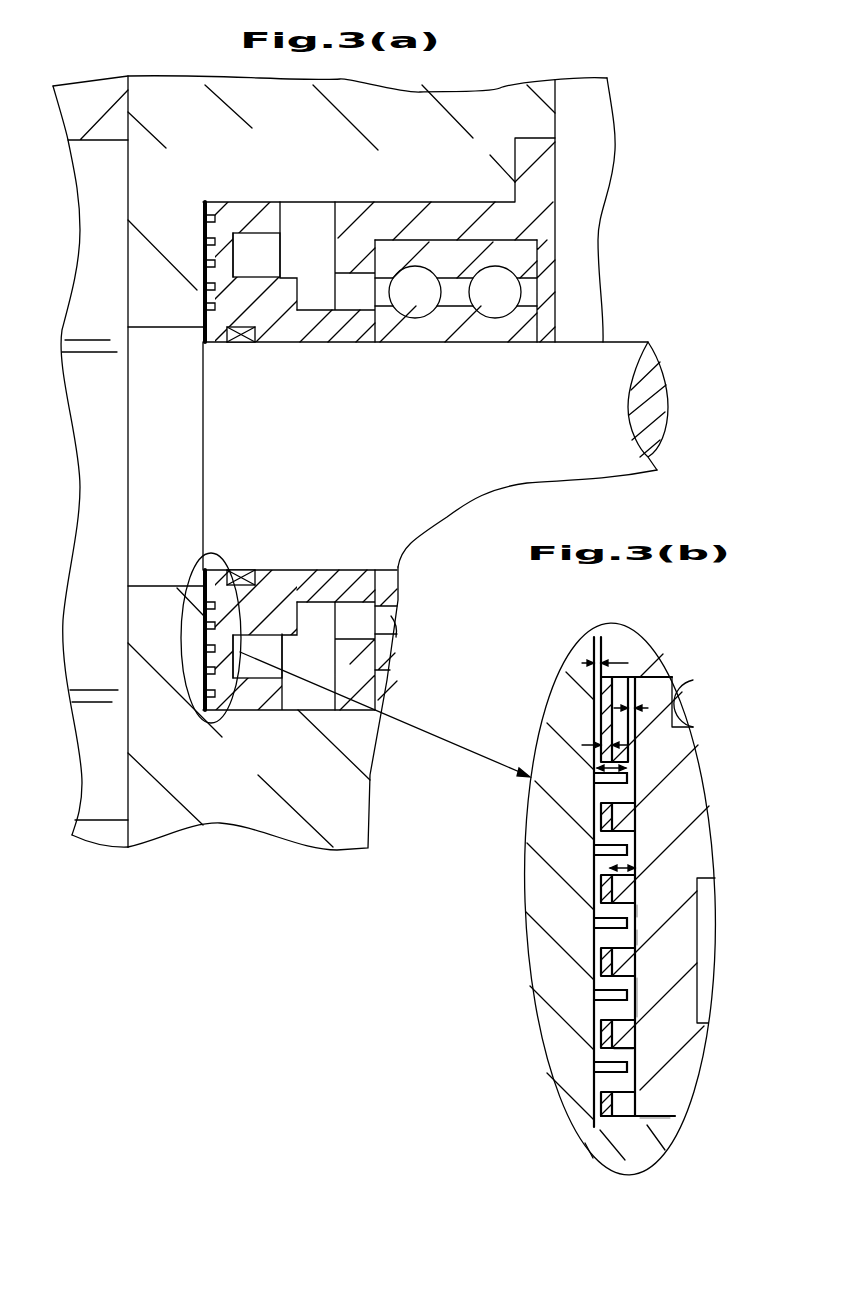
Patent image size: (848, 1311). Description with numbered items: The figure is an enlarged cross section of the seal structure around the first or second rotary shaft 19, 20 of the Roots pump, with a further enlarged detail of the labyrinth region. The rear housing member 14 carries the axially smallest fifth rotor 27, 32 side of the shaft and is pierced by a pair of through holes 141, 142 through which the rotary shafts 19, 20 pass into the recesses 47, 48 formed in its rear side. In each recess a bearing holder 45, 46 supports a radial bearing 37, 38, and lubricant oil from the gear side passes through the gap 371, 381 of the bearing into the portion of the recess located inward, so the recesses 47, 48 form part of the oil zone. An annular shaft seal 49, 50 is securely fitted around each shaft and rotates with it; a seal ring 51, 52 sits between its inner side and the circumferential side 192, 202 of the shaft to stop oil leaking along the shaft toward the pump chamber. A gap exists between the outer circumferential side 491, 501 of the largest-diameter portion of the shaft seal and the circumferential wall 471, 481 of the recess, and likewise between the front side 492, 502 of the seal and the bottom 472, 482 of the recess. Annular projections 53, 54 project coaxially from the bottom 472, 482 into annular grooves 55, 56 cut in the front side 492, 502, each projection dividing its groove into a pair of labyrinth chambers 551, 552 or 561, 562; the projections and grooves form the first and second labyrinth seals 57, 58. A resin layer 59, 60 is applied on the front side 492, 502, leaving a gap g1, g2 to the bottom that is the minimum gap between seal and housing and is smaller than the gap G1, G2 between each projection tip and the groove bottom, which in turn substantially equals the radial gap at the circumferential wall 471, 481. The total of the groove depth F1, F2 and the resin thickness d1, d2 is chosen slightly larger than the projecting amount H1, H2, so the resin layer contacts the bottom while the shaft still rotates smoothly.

In FIG. 3A, the rear housing member 14 is at (557, 128).
In FIG. 3B, the rear housing member 14 is at (543, 982).
In FIG. 3A, the first rotary shaft 19 is at (471, 440).
In FIG. 3A, the second rotary shaft 20 is at (614, 345).
In FIG. 3A, the fifth rotor 27 is at (101, 493).
In FIG. 3A, the fifth rotor 32 is at (105, 807).
In FIG. 3A, the radial bearing 37 is at (541, 450).
In FIG. 3A, the radial bearing 38 is at (528, 262).
In FIG. 3A, the gap 371 is at (629, 291).
In FIG. 3A, the gap 381 is at (528, 292).
In FIG. 3A, the bearing holder 45 is at (425, 427).
In FIG. 3A, the bearing holder 46 is at (452, 215).
In FIG. 3A, the recess 47 is at (263, 236).
In FIG. 3B, the recess 47 is at (507, 918).
In FIG. 3A, the recess 48 is at (300, 205).
In FIG. 3B, the recess 48 is at (507, 918).
In FIG. 3B, the circumferential wall 471 is at (557, 1138).
In FIG. 3B, the circumferential wall 481 is at (640, 1127).
In FIG. 3B, the bottom 472 is at (534, 898).
In FIG. 3B, the bottom 482 is at (600, 1100).
In FIG. 3A, the first shaft seal 49 is at (265, 668).
In FIG. 3B, the first shaft seal 49 is at (695, 885).
In FIG. 3A, the second shaft seal 50 is at (263, 698).
In FIG. 3B, the second shaft seal 50 is at (675, 1083).
In FIG. 3B, the outer circumferential side 491 is at (725, 1132).
In FIG. 3B, the outer circumferential side 501 is at (662, 1117).
In FIG. 3B, the front side 492 is at (719, 1055).
In FIG. 3B, the front side 502 is at (630, 1052).
In FIG. 3A, the seal ring 51 is at (254, 456).
In FIG. 3B, the seal ring 51 is at (731, 702).
In FIG. 3A, the seal ring 52 is at (244, 345).
In FIG. 3B, the seal ring 52 is at (680, 707).
In FIG. 3B, the annular projection 53 is at (697, 919).
In FIG. 3B, the annular projection 54 is at (633, 850).
In FIG. 3B, the annular groove 55 is at (721, 996).
In FIG. 3B, the annular groove 56 is at (640, 980).
In FIG. 3B, the labyrinth chamber 551 is at (731, 908).
In FIG. 3B, the labyrinth chamber 561 is at (640, 912).
In FIG. 3B, the labyrinth chamber 552 is at (731, 941).
In FIG. 3B, the labyrinth chamber 562 is at (640, 940).
In FIG. 3A, the first labyrinth seal 57 is at (184, 233).
In FIG. 3A, the second labyrinth seal 58 is at (196, 308).
In FIG. 3B, the resin layer 59 is at (509, 959).
In FIG. 3B, the resin layer 60 is at (612, 1005).
In FIG. 3A, the through hole 141 is at (232, 456).
In FIG. 3B, the through hole 141 is at (539, 877).
In FIG. 3A, the through hole 142 is at (152, 585).
In FIG. 3B, the through hole 142 is at (592, 727).
In FIG. 3A, the circumferential side 192 is at (366, 456).
In FIG. 3A, the circumferential side 202 is at (351, 335).
In FIG. 3B, the thickness of the resin layer d1 is at (604, 632).
In FIG. 3B, the thickness of the resin layer d2 is at (606, 676).
In FIG. 3B, the gap G1 is at (684, 678).
In FIG. 3B, the gap G2 is at (636, 706).
In FIG. 3B, the gap g1 is at (548, 724).
In FIG. 3B, the gap g2 is at (587, 745).
In FIG. 3B, the projecting amount H1 is at (539, 785).
In FIG. 3B, the projecting amount H2 is at (605, 775).
In FIG. 3B, the depth of the annular groove F1 is at (705, 859).
In FIG. 3B, the depth of the annular groove F2 is at (636, 868).